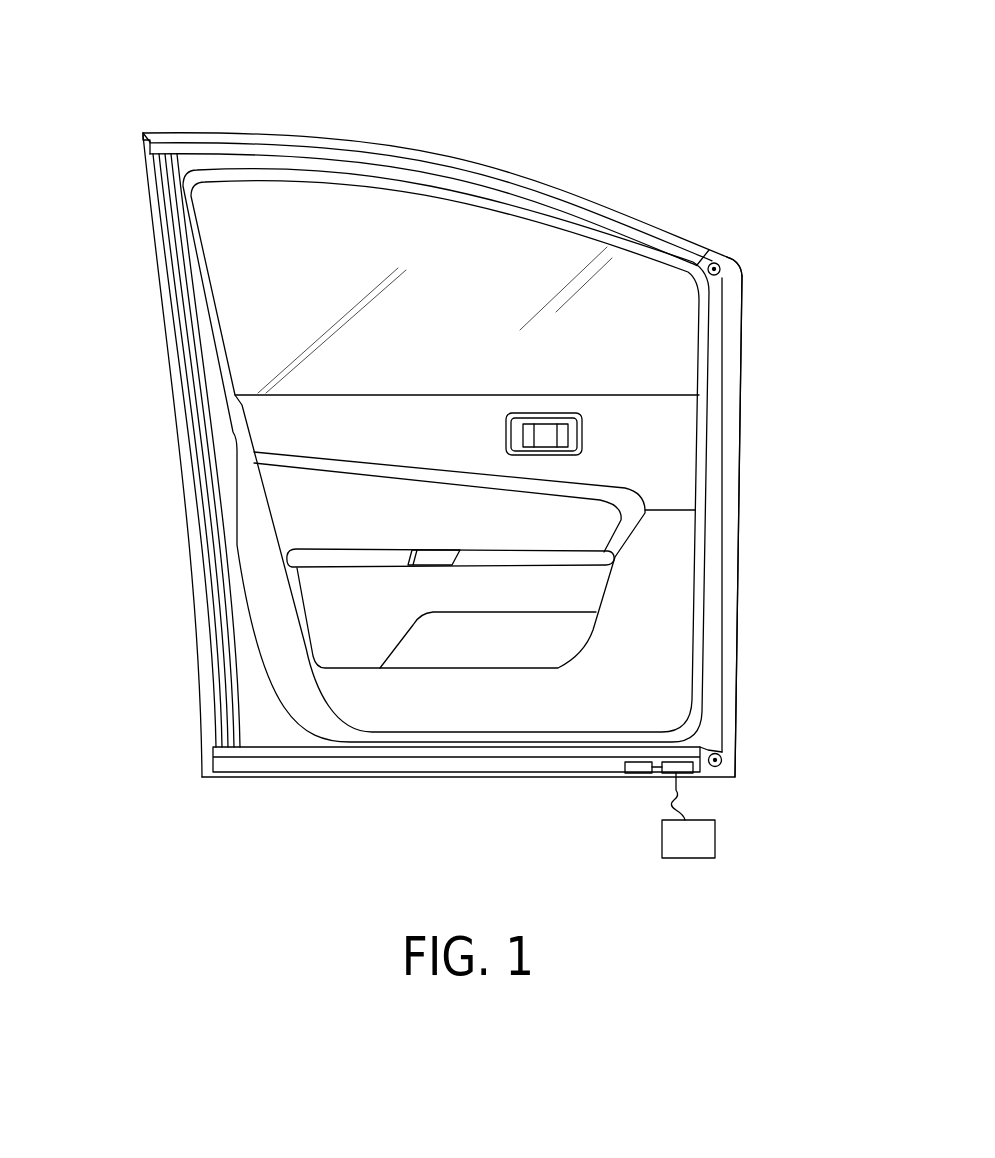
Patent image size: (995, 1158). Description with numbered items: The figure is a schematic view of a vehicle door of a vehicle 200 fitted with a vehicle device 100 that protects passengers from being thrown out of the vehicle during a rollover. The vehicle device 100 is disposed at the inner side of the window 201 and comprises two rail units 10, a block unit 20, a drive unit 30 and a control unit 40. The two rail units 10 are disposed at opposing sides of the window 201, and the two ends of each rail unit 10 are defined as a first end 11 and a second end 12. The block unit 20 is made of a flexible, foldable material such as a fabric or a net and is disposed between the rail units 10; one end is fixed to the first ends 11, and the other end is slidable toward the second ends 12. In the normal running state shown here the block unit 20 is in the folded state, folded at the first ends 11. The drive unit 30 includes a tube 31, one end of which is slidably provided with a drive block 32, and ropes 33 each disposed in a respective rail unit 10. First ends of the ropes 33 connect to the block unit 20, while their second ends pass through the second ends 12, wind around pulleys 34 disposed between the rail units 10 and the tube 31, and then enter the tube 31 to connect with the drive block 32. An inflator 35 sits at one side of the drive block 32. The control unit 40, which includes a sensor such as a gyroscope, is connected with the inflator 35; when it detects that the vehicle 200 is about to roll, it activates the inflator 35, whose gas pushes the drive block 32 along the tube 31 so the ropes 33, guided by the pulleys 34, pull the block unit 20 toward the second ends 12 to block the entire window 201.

The rail unit 10 is at (570, 184).
The first end 11 is at (143, 132).
The second end 12 is at (704, 256).
The block unit 20 is at (158, 302).
The drive unit 30 is at (716, 782).
The tube 31 is at (421, 773).
The drive block 32 is at (622, 767).
The rope 33 is at (723, 434).
The pulley 34 is at (719, 276).
The inflator 35 is at (667, 774).
The control unit 40 is at (728, 848).
The vehicle device 100 is at (735, 248).
The vehicle 200 is at (210, 124).
The window 201 is at (322, 208).